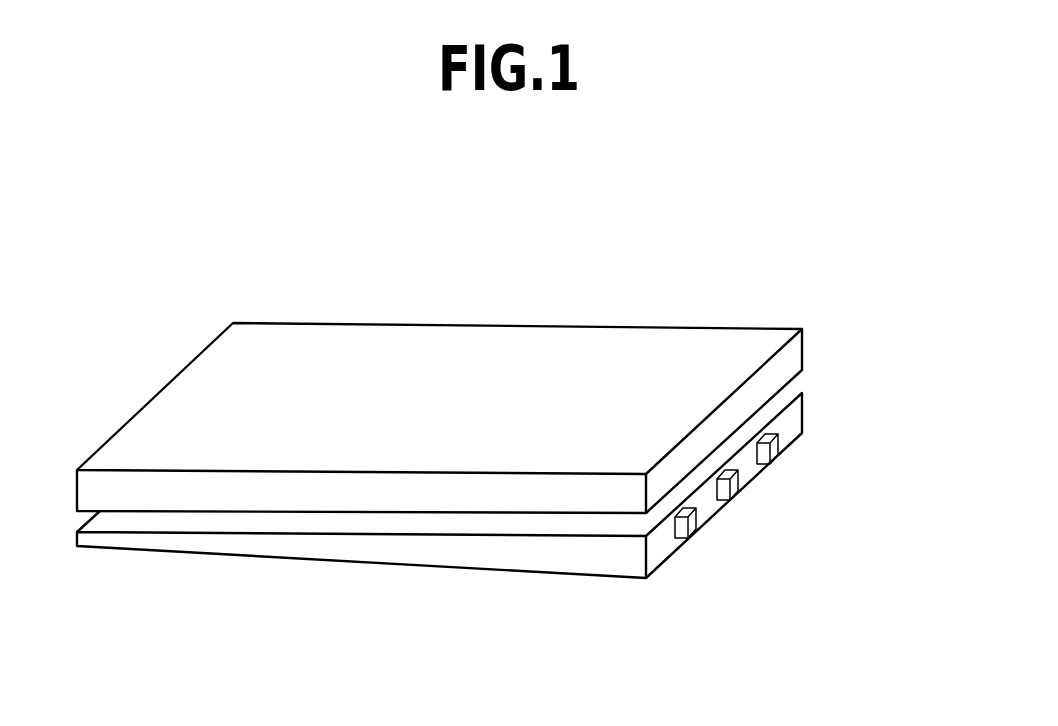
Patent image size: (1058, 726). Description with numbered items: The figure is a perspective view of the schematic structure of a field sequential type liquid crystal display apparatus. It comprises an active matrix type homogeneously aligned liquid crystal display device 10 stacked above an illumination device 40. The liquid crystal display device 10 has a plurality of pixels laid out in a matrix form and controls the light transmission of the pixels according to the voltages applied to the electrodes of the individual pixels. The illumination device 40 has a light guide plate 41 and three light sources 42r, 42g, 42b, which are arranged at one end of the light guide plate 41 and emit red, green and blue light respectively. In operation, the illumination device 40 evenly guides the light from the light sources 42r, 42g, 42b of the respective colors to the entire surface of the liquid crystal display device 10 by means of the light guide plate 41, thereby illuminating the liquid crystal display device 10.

The liquid crystal display device 10 is at (509, 455).
The illumination device 40 is at (509, 553).
The light guide plate 41 is at (450, 557).
The light source 42r is at (697, 527).
The light source 42g is at (727, 490).
The light source 42b is at (767, 454).